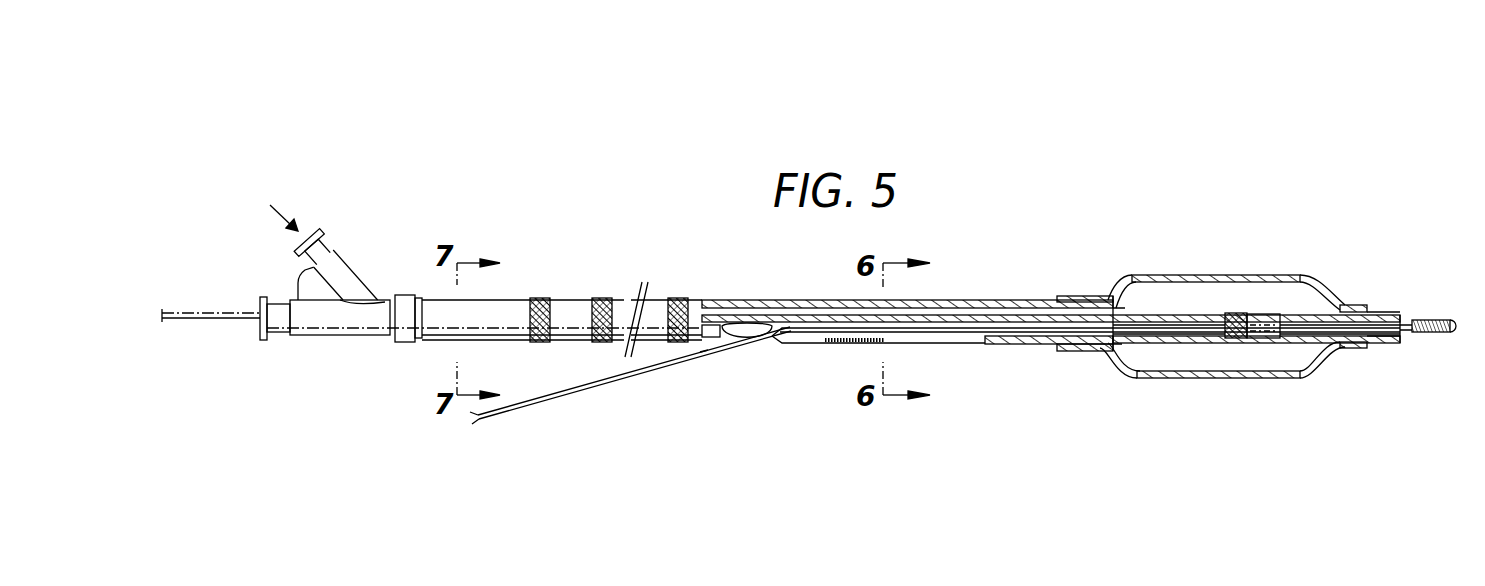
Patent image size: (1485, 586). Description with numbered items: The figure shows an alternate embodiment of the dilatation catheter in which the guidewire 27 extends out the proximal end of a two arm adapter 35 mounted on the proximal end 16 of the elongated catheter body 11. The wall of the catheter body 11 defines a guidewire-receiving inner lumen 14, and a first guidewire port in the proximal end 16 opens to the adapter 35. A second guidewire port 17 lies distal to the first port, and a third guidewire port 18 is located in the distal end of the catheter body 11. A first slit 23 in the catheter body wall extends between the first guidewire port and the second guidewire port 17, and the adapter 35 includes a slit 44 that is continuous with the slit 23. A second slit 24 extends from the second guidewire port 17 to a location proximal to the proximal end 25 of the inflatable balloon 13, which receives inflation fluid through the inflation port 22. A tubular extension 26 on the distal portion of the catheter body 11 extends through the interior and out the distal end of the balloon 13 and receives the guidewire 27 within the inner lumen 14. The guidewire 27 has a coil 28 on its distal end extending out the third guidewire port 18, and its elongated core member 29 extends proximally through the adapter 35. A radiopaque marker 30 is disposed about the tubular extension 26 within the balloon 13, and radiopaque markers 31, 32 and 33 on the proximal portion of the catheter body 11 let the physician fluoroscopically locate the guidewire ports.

The catheter body 11 is at (578, 328).
The inflatable balloon 13 is at (1300, 273).
The guidewire-receiving inner lumen 14 is at (923, 337).
The proximal end 16 is at (425, 295).
The second guidewire port 17 is at (743, 328).
The third guidewire port 18 is at (1403, 318).
The inflation port 22 is at (1120, 312).
The first slit 23 is at (480, 342).
The second slit 24 is at (982, 342).
The proximal end of the balloon 25 is at (1070, 297).
The tubular extension 26 is at (1260, 340).
The guidewire 27 is at (177, 322).
The coil 28 is at (1430, 318).
The elongated core member 29 is at (236, 312).
The radiopaque marker 30 is at (1232, 313).
The radiopaque marker 31 is at (543, 298).
The radiopaque marker 32 is at (607, 298).
The radiopaque marker 33 is at (678, 298).
The two arm adapter 35 is at (330, 315).
The slit 44 is at (360, 337).